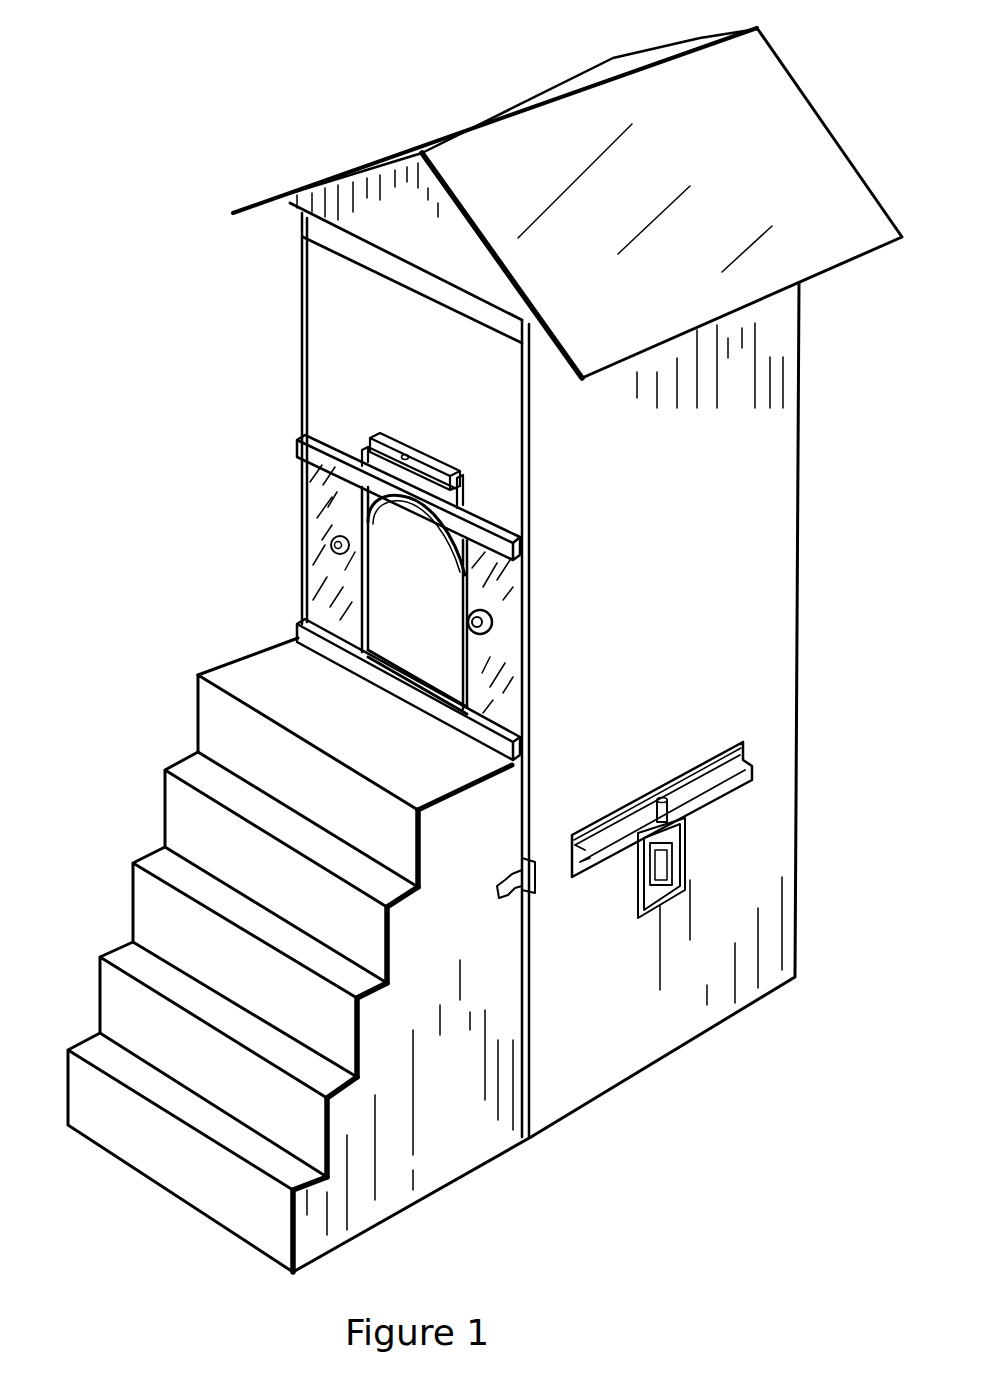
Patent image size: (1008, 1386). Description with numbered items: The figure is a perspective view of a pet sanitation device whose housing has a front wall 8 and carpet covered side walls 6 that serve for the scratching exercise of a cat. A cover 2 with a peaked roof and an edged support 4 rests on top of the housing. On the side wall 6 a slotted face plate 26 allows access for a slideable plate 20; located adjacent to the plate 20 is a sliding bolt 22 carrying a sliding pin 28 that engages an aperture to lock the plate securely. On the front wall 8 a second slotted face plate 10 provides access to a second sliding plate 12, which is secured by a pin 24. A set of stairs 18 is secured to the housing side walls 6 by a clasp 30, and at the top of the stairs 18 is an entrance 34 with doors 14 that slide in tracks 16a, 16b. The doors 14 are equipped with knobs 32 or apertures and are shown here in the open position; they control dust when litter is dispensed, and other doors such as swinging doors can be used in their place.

The cover 2 is at (770, 64).
The edged support 4 is at (512, 327).
The side walls 6 is at (766, 340).
The front wall 8 is at (508, 413).
The second slotted face plate 10 is at (462, 502).
The second sliding plate 12 is at (430, 477).
The doors 14 is at (508, 677).
The track 16a is at (535, 555).
The track 16b is at (530, 763).
The set of stairs 18 is at (208, 725).
The slideable plate 20 is at (745, 788).
The sliding bolt 22 is at (672, 850).
The pin 24 is at (405, 462).
The slotted face plate 26 is at (728, 735).
The sliding pin 28 is at (668, 795).
The clasp 30 is at (533, 897).
The knobs 32 is at (493, 617).
The entrance 34 is at (405, 632).